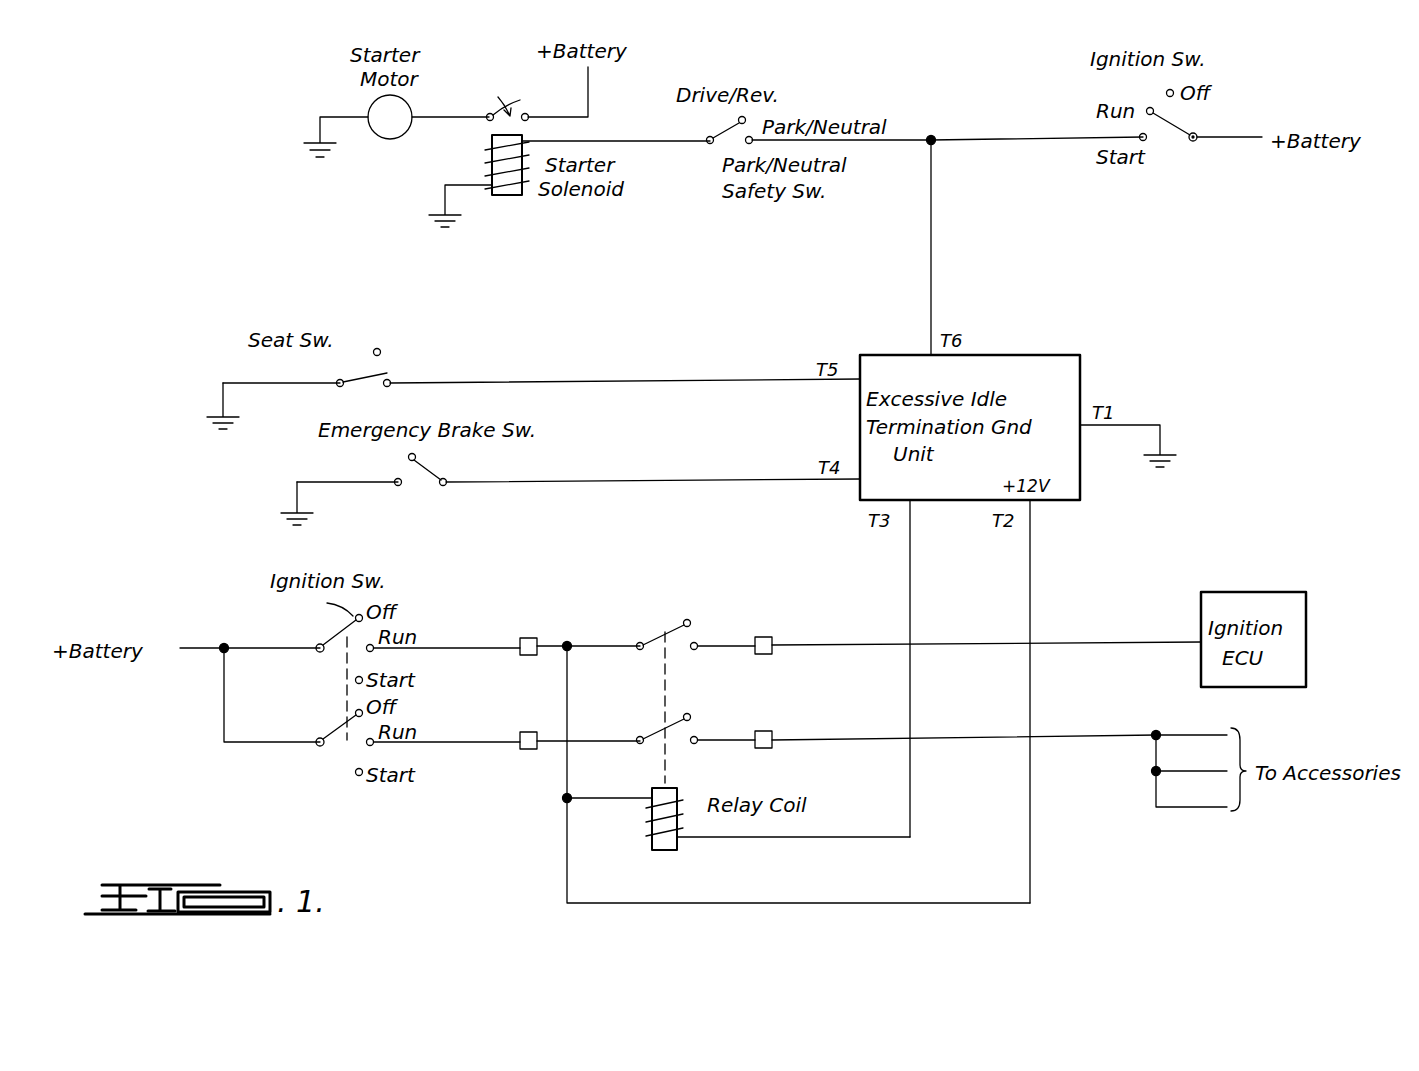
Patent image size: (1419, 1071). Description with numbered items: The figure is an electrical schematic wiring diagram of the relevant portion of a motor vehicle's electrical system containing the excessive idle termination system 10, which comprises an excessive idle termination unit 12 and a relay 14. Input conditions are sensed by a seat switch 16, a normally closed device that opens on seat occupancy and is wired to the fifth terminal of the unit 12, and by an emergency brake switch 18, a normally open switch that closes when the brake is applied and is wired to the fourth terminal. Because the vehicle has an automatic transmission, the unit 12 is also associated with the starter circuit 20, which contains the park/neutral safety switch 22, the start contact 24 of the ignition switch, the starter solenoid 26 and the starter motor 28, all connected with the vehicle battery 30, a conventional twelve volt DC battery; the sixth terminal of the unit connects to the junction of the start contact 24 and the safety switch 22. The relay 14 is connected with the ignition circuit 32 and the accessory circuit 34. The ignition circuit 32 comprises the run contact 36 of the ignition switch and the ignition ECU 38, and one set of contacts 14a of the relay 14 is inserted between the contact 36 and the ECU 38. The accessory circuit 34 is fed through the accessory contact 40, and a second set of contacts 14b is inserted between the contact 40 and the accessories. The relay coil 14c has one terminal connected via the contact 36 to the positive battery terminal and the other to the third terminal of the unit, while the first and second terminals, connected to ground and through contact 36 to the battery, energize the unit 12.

The excessive idle termination system 10 is at (238, 259).
The excessive idle termination unit 12 is at (1082, 353).
The relay 14 is at (597, 611).
The first set of contacts 14a is at (670, 620).
The second set of contacts 14b is at (673, 712).
The relay coil 14c is at (668, 851).
The seat switch 16 is at (380, 373).
The emergency brake switch 18 is at (392, 464).
The starter circuit 20 is at (964, 160).
The park/neutral safety switch 22 is at (720, 147).
The start contact 24 is at (1180, 140).
The starter solenoid 26 is at (505, 196).
The starter motor 28 is at (386, 139).
The battery 30 is at (1322, 124).
The ignition circuit 32 is at (800, 640).
The accessory circuit 34 is at (795, 734).
The run contact 36 is at (340, 652).
The ignition electronic control unit 38 is at (1238, 590).
The accessory contact 40 is at (345, 755).